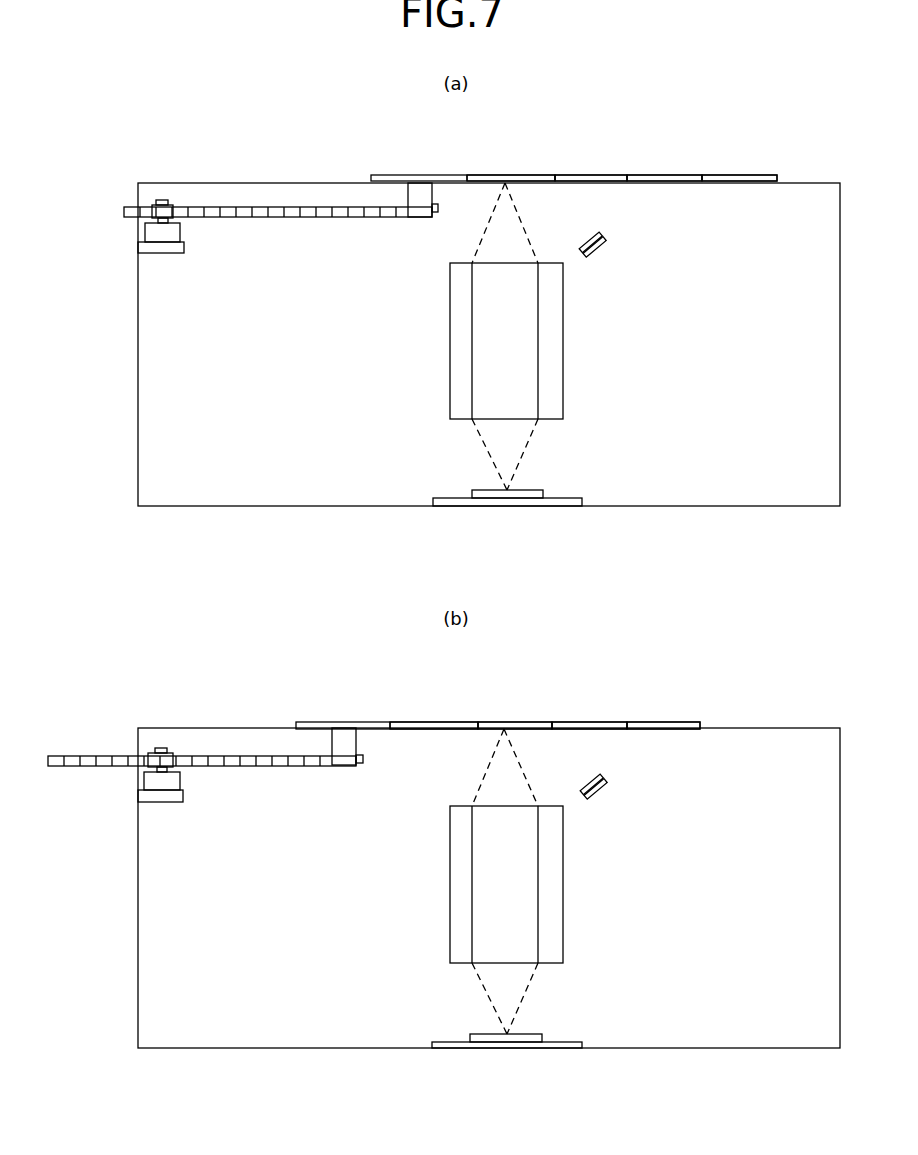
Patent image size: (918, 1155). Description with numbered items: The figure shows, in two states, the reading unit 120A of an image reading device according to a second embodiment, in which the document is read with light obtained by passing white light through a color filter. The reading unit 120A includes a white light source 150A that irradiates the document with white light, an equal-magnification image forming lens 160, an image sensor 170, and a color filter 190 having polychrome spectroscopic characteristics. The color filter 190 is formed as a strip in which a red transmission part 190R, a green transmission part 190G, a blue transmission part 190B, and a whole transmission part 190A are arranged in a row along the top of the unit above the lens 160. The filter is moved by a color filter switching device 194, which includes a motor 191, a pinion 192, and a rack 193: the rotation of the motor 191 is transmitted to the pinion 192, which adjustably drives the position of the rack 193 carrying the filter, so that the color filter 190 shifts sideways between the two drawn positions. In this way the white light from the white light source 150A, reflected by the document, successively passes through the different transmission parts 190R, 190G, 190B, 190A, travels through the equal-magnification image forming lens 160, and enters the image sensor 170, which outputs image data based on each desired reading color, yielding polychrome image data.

The reading unit 120A is at (90, 178).
The color filter 190 is at (762, 172).
The whole transmission part 190A is at (492, 175).
The red transmission part 190R is at (580, 175).
The green transmission part 190G is at (663, 175).
The blue transmission part 190B is at (743, 175).
The motor 191 is at (150, 233).
The pinion 192 is at (150, 208).
The rack 193 is at (222, 207).
The color filter switching device 194 is at (232, 247).
The white light source 150A is at (595, 229).
The equal-magnification image forming lens 160 is at (451, 419).
The image sensor 170 is at (529, 489).